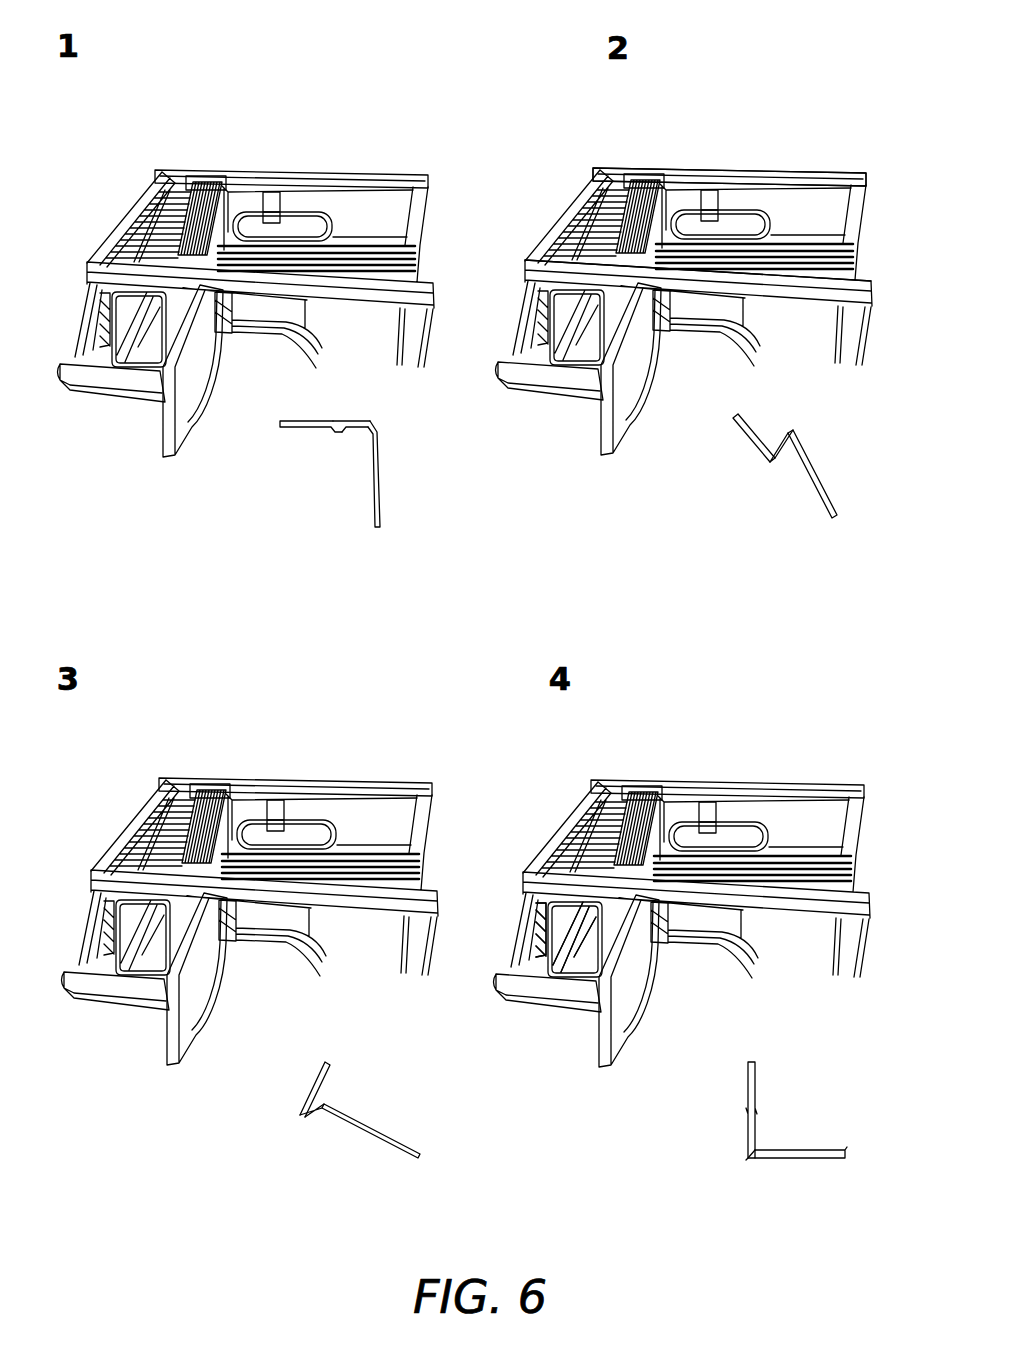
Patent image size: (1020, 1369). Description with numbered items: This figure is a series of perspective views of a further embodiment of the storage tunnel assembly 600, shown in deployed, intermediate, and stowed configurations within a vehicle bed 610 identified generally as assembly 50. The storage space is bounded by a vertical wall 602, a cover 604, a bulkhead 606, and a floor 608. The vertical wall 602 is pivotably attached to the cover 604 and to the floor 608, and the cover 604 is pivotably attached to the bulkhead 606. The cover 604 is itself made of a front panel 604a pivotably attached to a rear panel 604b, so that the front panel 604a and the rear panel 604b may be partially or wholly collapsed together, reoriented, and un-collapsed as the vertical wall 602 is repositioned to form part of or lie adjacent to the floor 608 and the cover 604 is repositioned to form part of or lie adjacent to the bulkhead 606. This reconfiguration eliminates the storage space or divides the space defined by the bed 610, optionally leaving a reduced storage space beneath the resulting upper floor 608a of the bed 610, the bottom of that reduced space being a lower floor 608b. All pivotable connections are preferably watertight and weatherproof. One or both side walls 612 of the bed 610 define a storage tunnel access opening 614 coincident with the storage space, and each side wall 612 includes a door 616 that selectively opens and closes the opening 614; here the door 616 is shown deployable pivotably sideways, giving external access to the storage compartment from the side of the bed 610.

The refrigerator appliance door shelf assembly 50 is at (522, 80).
The storage tunnel assembly 600 is at (182, 170).
The vertical wall 602 is at (227, 227).
The cover 604 is at (209, 168).
The front panel 604a is at (155, 207).
The rear panel 604b is at (208, 188).
The bulkhead 606 is at (130, 220).
The floor 608 is at (297, 263).
The upper floor 608a is at (517, 916).
The lower floor 608b is at (564, 961).
The bed 610 is at (356, 134).
The side wall 612 is at (400, 175).
The storage tunnel access opening 614 is at (110, 347).
The door 616 is at (173, 423).